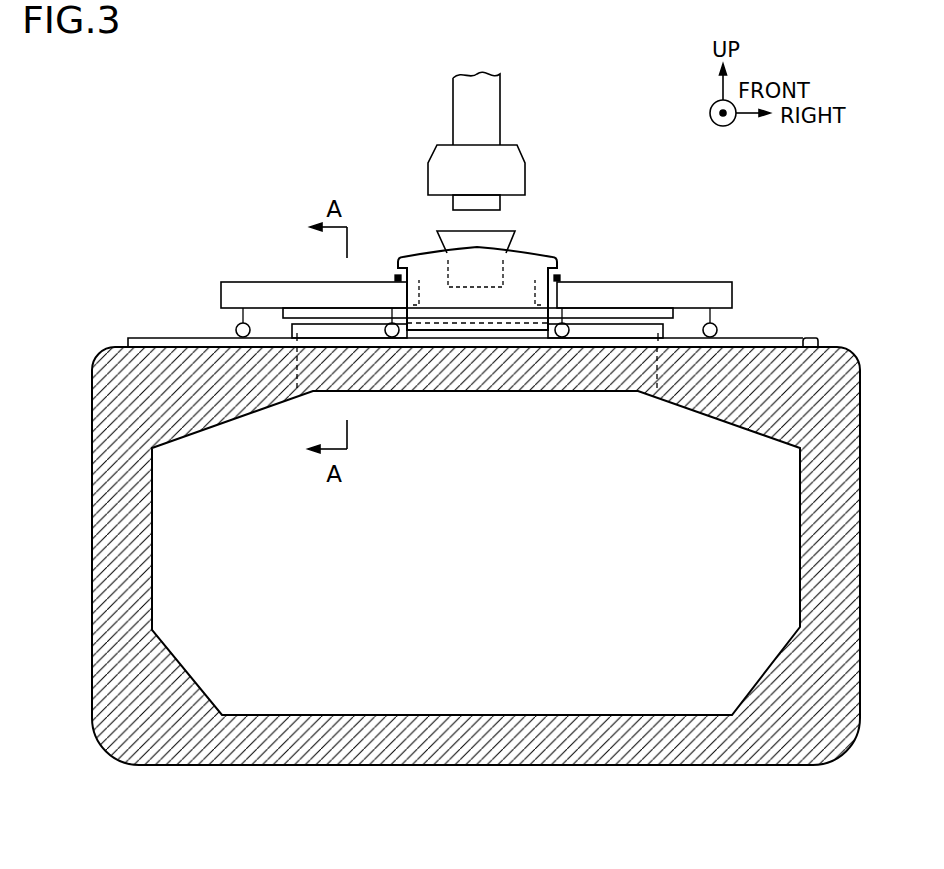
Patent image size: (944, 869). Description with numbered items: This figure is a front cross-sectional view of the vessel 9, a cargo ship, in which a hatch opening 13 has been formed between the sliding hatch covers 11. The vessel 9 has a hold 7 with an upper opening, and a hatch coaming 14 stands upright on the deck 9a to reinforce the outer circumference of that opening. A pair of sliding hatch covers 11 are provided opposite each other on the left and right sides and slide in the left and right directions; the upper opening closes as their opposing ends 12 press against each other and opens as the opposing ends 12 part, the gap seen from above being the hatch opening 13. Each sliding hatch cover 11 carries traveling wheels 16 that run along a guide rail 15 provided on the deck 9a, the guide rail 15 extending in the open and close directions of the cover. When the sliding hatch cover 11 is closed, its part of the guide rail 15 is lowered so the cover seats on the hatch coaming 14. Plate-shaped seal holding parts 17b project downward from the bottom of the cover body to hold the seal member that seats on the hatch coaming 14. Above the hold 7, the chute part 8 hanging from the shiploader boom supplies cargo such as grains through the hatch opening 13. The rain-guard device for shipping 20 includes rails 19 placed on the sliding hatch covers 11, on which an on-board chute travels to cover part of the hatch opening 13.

The hold 7 is at (538, 553).
The chute part 8 is at (500, 102).
The vessel 9 is at (827, 311).
The deck 9a is at (814, 332).
The sliding hatch cover 11 is at (233, 281).
The opposing end 12 is at (420, 294).
The hatch opening 13 is at (435, 270).
The hatch coaming 14 is at (329, 316).
The guide rail 15 is at (776, 337).
The traveling wheel 16 is at (249, 326).
The seal holding part 17b is at (643, 312).
The rail 19 is at (396, 278).
The rain-guard device for shipping 20 is at (529, 237).